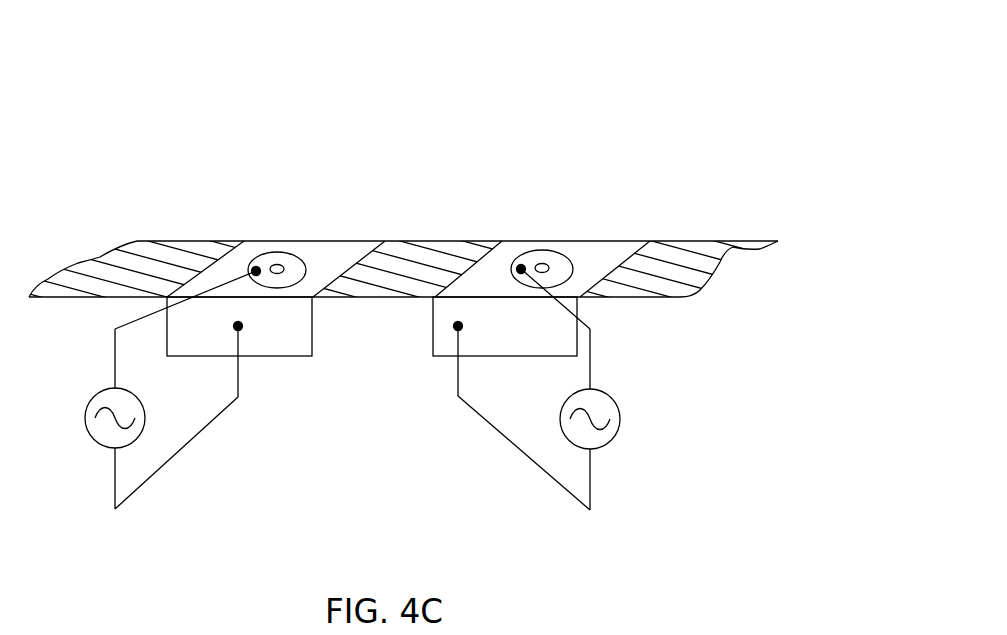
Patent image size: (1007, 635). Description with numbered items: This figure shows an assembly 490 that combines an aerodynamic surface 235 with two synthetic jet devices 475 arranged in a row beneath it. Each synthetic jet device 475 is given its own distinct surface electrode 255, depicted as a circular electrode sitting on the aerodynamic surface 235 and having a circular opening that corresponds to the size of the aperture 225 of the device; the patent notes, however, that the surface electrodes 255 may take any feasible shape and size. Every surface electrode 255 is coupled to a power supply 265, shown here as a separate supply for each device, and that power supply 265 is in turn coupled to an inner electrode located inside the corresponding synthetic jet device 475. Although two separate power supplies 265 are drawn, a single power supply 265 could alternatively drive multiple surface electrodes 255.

The aperture 225 is at (265, 258).
The surface electrode 255 is at (300, 263).
The aerodynamic surface 235 is at (683, 252).
The power supply 265 is at (95, 398).
The synthetic jet device 475 is at (433, 337).
The assembly 490 is at (627, 93).